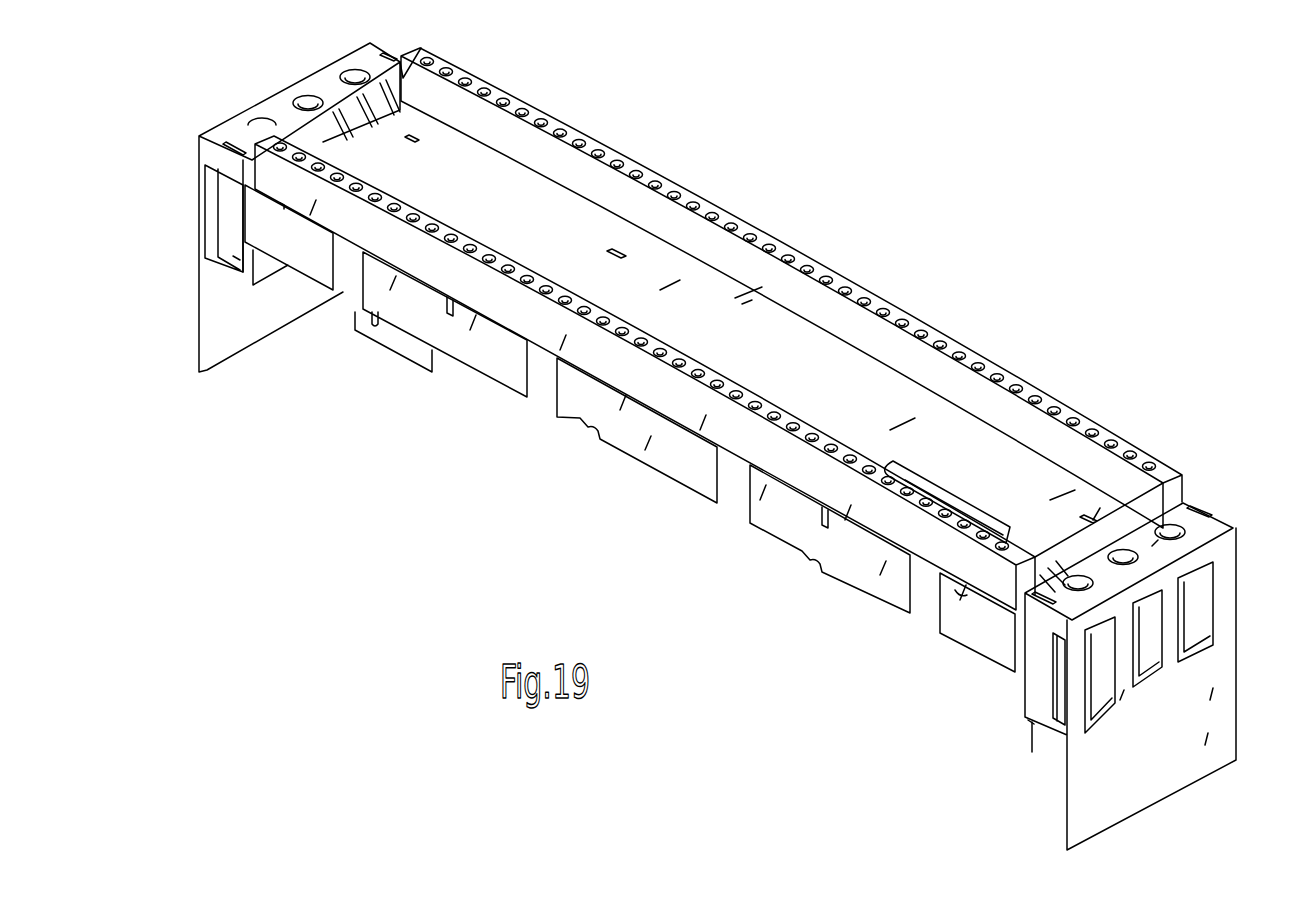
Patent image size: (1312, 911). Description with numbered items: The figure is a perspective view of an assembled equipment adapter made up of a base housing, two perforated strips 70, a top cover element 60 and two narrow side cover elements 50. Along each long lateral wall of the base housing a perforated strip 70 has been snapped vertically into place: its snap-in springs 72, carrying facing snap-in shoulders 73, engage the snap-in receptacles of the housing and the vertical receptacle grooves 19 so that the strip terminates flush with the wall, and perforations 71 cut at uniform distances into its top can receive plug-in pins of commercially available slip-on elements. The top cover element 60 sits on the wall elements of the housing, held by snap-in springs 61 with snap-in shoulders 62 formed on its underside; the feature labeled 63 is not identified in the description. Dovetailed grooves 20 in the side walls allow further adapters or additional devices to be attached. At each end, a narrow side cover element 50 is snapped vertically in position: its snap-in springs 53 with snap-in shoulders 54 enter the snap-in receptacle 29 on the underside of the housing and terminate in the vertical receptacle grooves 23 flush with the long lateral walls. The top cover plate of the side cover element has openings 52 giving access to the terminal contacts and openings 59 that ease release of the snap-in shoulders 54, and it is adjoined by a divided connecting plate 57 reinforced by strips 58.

The vertical receptacle grooves 19 is at (216, 262).
The dovetailed grooves 20 is at (822, 514).
The vertical receptacle grooves 23 is at (633, 536).
The snap-in receptacle 29 is at (233, 256).
The narrow side cover element 50 is at (690, 428).
The openings 52 is at (298, 97).
The snap-in springs 53 is at (982, 697).
The snap-in shoulders 54 is at (1040, 676).
The divided connecting plate 57 is at (358, 126).
The strips 58 is at (410, 62).
The openings 59 is at (228, 150).
The top cover element 60 is at (791, 288).
The snap-in springs 61 is at (553, 228).
The snap-in shoulders 62 is at (610, 256).
The coding slot 63 is at (553, 228).
The perforated strips 70 is at (640, 404).
The perforations 71 is at (1050, 393).
The snap-in springs 72 is at (630, 428).
The snap-in shoulders 73 is at (734, 500).